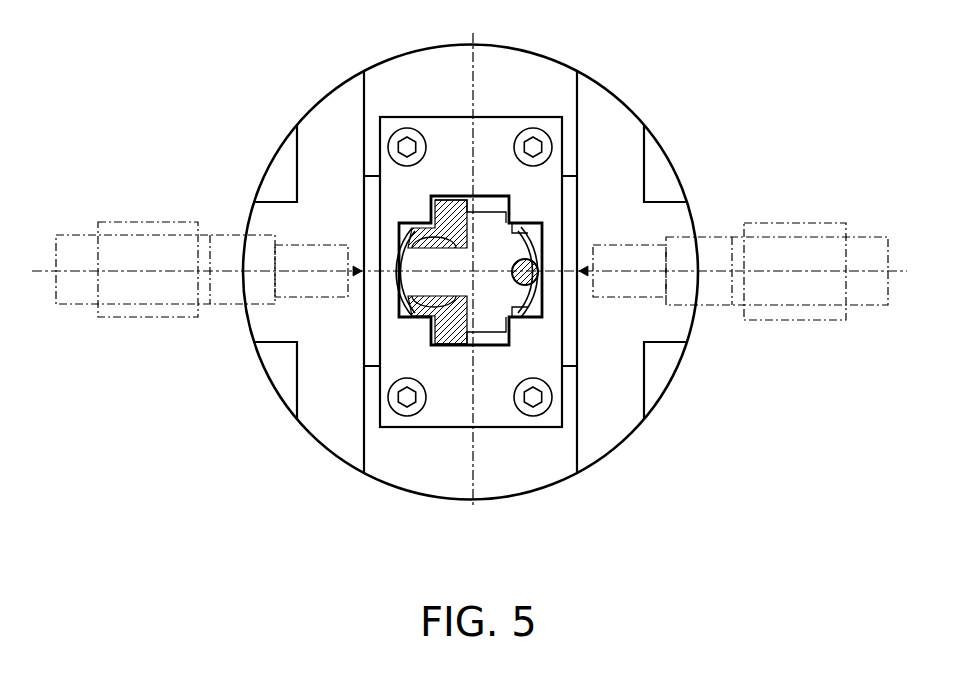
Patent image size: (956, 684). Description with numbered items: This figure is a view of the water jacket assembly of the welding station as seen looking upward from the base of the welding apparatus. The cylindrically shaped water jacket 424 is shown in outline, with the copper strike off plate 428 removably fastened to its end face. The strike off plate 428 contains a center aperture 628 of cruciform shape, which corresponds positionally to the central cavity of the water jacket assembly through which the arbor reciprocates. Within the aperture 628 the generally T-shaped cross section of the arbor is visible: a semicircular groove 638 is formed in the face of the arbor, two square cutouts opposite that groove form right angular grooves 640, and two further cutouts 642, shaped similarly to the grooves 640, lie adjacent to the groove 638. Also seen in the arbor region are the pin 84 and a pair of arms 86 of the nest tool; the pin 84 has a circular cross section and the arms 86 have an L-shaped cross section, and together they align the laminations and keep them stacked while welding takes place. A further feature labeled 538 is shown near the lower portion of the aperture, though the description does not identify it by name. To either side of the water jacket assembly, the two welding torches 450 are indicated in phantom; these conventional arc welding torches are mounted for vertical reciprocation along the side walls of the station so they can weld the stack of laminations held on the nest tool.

The water jacket 424 is at (415, 462).
The strike off plate 428 is at (493, 125).
The aperture 628 is at (447, 197).
The arms 86 is at (435, 214).
The right angular grooves 640 is at (412, 238).
The cutouts 642 is at (517, 227).
The semicircular groove 638 is at (530, 247).
The pin 84 is at (537, 286).
The central opening 538 is at (490, 320).
The welding torch 450 is at (67, 303).